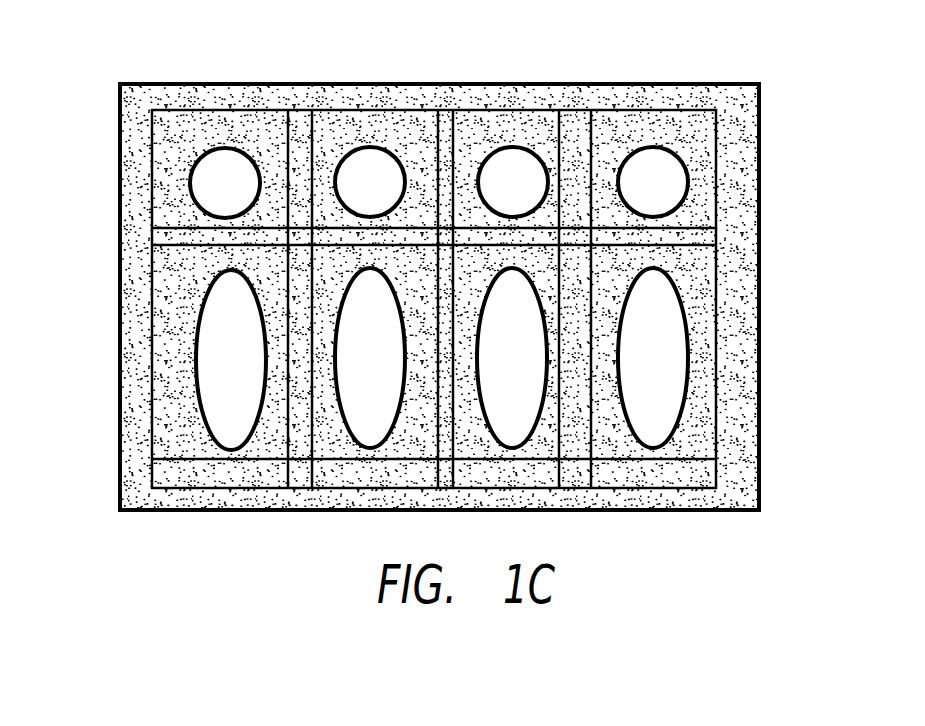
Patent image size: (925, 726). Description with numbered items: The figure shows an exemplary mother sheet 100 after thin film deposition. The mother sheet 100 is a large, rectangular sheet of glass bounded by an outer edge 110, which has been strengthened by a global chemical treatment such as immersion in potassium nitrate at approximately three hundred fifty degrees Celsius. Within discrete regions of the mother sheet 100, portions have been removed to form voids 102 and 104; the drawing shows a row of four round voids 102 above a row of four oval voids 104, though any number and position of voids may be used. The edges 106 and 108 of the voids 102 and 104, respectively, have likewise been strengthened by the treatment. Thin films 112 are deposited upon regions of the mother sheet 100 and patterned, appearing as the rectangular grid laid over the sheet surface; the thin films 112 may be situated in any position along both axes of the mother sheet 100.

The mother sheet 100 is at (608, 92).
The void 102 is at (230, 170).
The void 104 is at (222, 298).
The edge of void 106 is at (205, 147).
The edge of void 108 is at (200, 313).
The outer edge 110 is at (118, 465).
The thin film 112 is at (717, 377).